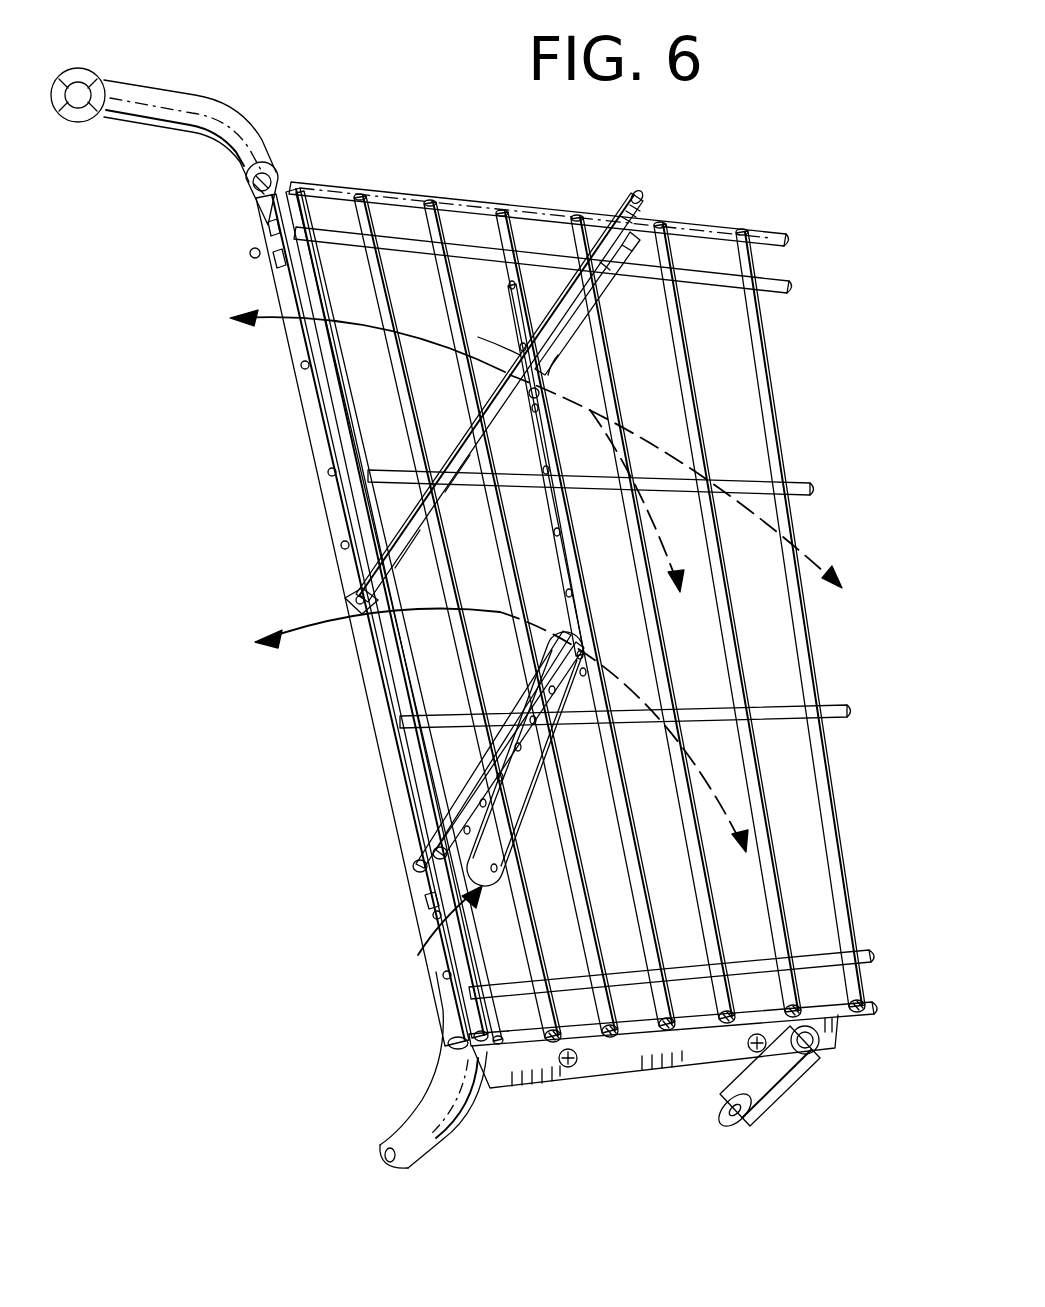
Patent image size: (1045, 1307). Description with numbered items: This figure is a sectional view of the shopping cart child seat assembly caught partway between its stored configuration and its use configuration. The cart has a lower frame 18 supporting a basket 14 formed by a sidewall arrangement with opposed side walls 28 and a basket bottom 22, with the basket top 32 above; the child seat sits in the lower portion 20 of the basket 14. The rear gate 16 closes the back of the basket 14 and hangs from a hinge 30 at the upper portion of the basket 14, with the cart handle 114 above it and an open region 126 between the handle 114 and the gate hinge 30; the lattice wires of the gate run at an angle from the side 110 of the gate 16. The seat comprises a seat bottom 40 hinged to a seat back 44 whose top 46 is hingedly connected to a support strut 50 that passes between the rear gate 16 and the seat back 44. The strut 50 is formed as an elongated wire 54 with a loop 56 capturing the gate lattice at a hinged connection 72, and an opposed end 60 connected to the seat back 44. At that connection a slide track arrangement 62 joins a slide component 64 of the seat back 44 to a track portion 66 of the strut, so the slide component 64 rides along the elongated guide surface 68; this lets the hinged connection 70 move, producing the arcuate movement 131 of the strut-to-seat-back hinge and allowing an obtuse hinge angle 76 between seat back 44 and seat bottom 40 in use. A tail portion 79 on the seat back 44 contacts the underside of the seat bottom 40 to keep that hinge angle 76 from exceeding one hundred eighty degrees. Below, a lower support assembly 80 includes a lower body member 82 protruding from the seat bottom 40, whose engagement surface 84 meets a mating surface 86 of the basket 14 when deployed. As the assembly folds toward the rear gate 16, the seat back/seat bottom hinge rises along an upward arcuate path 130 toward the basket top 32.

The basket 14 is at (752, 213).
The rear gate 16 is at (253, 252).
The lower frame 18 is at (415, 1122).
The lower portion 20 is at (862, 902).
The basket bottom 22 is at (866, 1022).
The side walls 28 is at (777, 453).
The hinge 30 is at (280, 176).
The top 32 is at (400, 190).
The seat bottom 40 is at (490, 788).
The seat back 44 is at (478, 337).
The top 46 is at (495, 290).
The support strut 50 is at (462, 462).
The elongated wire 54 is at (412, 537).
The loop 56 is at (350, 583).
The opposed end 60 is at (620, 232).
The slide track arrangement 62 is at (563, 296).
The slide component 64 is at (540, 395).
The track portion 66 is at (618, 247).
The guide surface 68 is at (578, 335).
The hinged connection 70 is at (560, 358).
The hinged connection 72 is at (350, 608).
The hinge angle 76 is at (585, 688).
The tail portion 79 is at (630, 694).
The lower support assembly 80 is at (432, 932).
The lower body member 82 is at (520, 800).
The engagement surface 84 is at (495, 888).
The mating surface 86 is at (430, 906).
The side 110 is at (262, 225).
The cart handle 114 is at (96, 76).
The open region 126 is at (236, 99).
The upward arcuate path 130 is at (760, 800).
The arcuate movement 131 is at (283, 322).